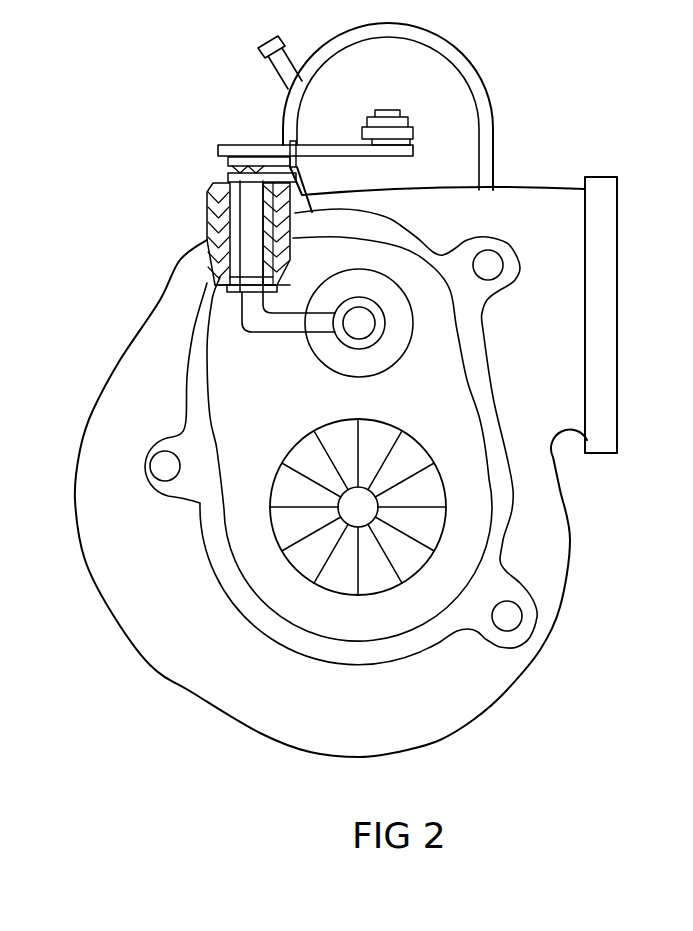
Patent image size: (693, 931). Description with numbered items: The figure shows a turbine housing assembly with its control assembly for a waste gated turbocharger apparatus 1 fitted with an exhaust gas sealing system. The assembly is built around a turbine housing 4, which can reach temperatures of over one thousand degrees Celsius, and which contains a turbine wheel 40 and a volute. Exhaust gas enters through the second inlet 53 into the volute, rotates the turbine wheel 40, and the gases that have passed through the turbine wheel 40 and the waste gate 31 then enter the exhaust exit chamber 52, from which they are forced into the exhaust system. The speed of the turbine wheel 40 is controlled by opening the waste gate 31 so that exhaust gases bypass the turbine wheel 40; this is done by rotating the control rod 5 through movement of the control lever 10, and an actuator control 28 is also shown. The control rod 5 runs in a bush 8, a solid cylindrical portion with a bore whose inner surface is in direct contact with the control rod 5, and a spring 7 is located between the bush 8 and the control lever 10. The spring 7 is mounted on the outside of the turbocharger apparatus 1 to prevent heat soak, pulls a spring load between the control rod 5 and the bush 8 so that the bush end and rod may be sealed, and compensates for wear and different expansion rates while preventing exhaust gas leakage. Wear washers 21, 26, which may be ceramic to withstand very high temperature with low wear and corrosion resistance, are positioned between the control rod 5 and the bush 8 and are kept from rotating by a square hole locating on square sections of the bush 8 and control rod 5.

The waste gated turbocharger apparatus 1 is at (572, 151).
The turbine housing 4 is at (547, 557).
The control rod 5 is at (252, 217).
The spring 7 is at (238, 172).
The bush 8 is at (267, 207).
The control lever 10 is at (247, 150).
The wear washer 21 is at (273, 275).
The wear washer 26 is at (268, 288).
The actuator control 28 is at (435, 88).
The waste gate 31 is at (393, 332).
The turbine wheel 40 is at (410, 532).
The exhaust exit chamber 52 is at (440, 380).
The second inlet 53 is at (617, 323).